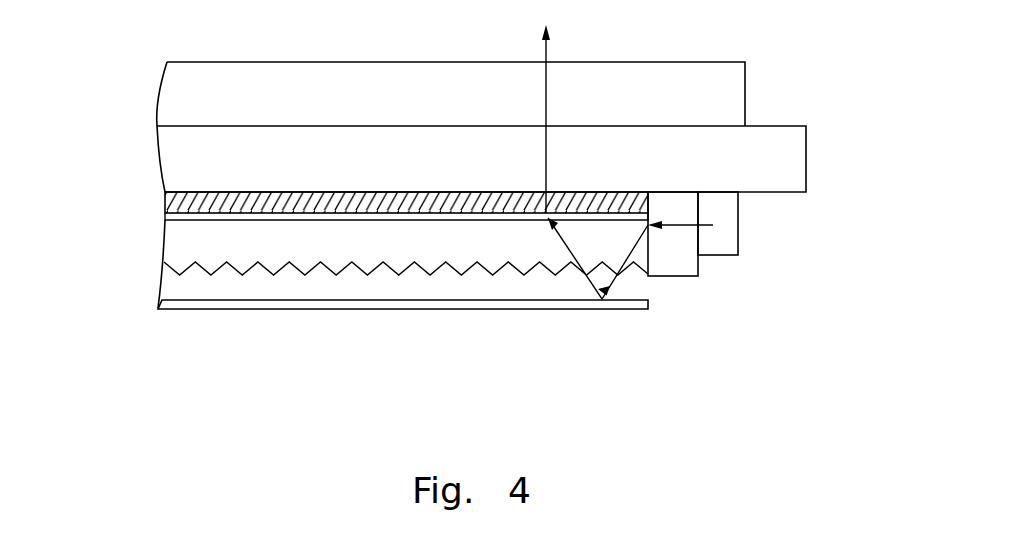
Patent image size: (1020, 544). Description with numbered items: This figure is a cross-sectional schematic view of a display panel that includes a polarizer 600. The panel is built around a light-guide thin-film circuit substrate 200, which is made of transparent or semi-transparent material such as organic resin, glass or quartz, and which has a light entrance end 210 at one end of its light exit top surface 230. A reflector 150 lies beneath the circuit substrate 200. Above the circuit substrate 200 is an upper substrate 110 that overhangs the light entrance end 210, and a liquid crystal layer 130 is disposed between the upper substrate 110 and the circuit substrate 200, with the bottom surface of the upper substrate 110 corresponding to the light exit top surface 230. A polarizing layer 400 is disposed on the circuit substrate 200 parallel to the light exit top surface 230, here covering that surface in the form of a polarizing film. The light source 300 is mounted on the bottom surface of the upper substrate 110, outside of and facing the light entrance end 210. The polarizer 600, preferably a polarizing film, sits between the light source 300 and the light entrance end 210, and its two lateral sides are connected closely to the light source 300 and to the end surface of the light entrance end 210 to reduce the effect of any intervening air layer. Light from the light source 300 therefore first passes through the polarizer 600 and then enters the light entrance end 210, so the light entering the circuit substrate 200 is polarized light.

The upper substrate 110 is at (768, 145).
The liquid crystal layer 130 is at (368, 192).
The light exit top surface 230 is at (233, 214).
The polarizing layer 400 is at (165, 213).
The light-guide thin-film circuit substrate 200 is at (177, 253).
The reflector 150 is at (278, 305).
The light entrance end 210 is at (647, 250).
The polarizer 600 is at (688, 261).
The light source 300 is at (725, 215).